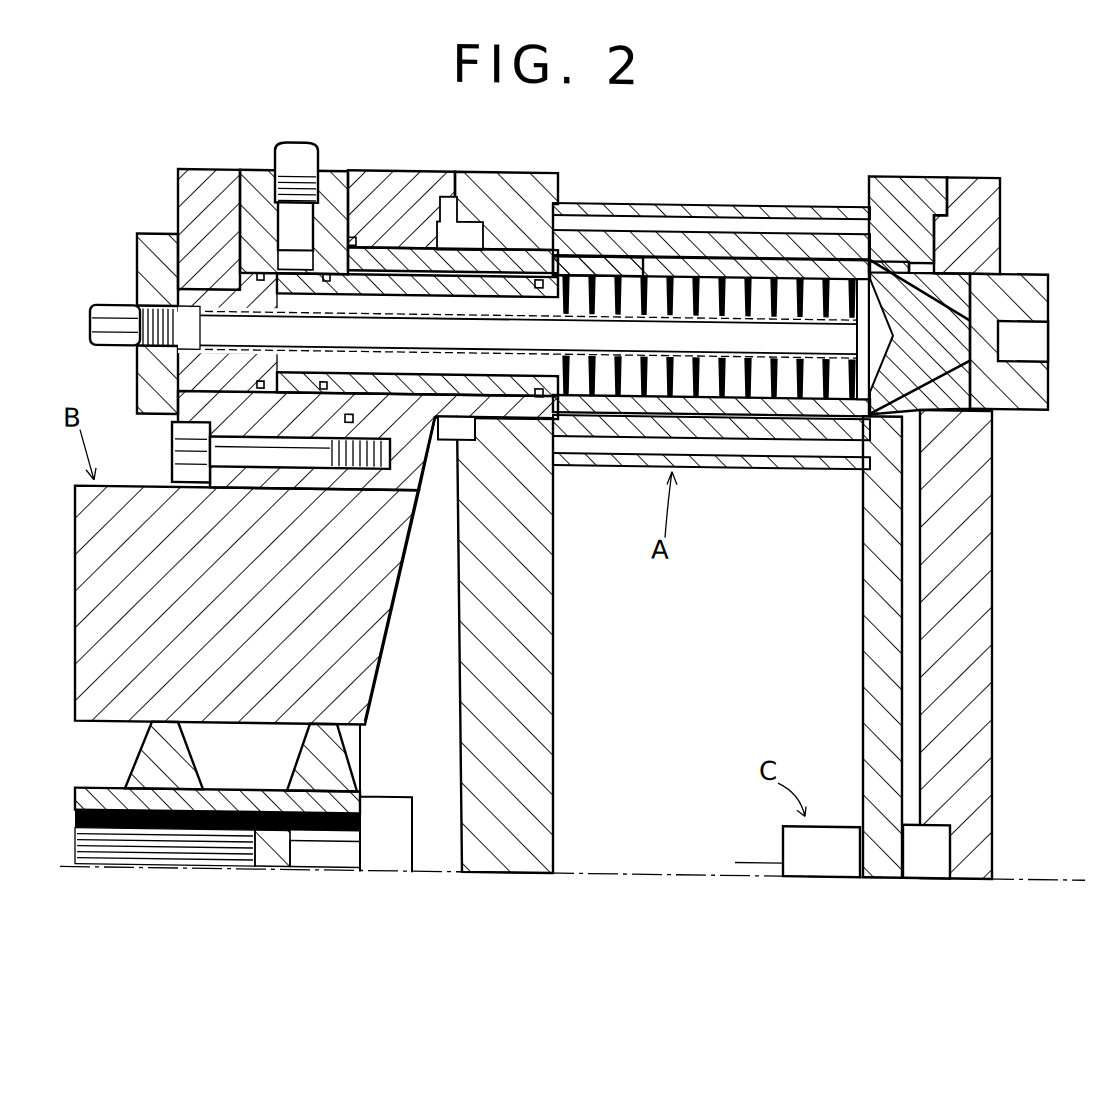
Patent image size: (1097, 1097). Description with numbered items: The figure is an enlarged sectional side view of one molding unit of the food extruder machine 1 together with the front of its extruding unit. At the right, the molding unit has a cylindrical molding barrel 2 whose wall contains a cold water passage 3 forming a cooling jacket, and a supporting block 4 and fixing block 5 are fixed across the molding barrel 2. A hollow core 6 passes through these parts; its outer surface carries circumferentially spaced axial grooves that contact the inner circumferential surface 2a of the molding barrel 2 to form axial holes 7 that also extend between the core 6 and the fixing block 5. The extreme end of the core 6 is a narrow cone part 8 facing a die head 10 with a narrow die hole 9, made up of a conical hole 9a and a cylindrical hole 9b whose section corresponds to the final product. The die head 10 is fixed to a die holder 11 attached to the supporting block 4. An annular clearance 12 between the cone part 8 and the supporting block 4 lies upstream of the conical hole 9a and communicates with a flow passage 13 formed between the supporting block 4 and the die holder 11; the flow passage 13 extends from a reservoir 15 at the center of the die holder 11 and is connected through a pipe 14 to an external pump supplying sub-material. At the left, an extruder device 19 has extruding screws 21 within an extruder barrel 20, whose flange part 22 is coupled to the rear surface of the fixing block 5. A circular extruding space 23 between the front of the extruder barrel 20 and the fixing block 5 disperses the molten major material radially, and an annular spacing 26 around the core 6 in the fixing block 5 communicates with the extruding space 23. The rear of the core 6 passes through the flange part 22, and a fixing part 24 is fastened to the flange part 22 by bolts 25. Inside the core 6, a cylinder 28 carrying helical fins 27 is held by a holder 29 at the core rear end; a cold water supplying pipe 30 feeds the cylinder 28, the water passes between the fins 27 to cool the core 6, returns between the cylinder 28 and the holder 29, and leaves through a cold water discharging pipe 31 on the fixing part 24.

The food extruder machine 1 is at (1026, 198).
The cylindrical molding barrel 2 is at (646, 240).
The inner circumferential surface 2a is at (592, 262).
The cold water passage 3 is at (690, 215).
The supporting block 4 is at (896, 195).
The fixing block 5 is at (520, 185).
The core 6 is at (746, 262).
The axial holes 7 is at (790, 262).
The cone part 8 is at (866, 452).
The die hole 9 is at (977, 364).
The conical hole 9a is at (1000, 392).
The cylindrical hole 9b is at (1040, 362).
The die head 10 is at (1026, 278).
The die holder 11 is at (985, 560).
The annular clearance 12 is at (886, 422).
The flow passage 13 is at (915, 740).
The pipe 14 is at (752, 862).
The reservoir 15 is at (940, 836).
The extruder device 19 is at (269, 764).
The extruder barrel 20 is at (355, 720).
The extruding screws 21 is at (352, 757).
The flange part 22 is at (420, 185).
The circular extruding space 23 is at (440, 606).
The fixing part 24 is at (342, 185).
The bolts 25 is at (225, 445).
The annular spacing 26 is at (447, 442).
The helical fins 27 is at (790, 365).
The cylinder 28 is at (760, 365).
The holder 29 is at (205, 185).
The cold water supplying pipe 30 is at (112, 308).
The cold water discharging pipe 31 is at (275, 158).